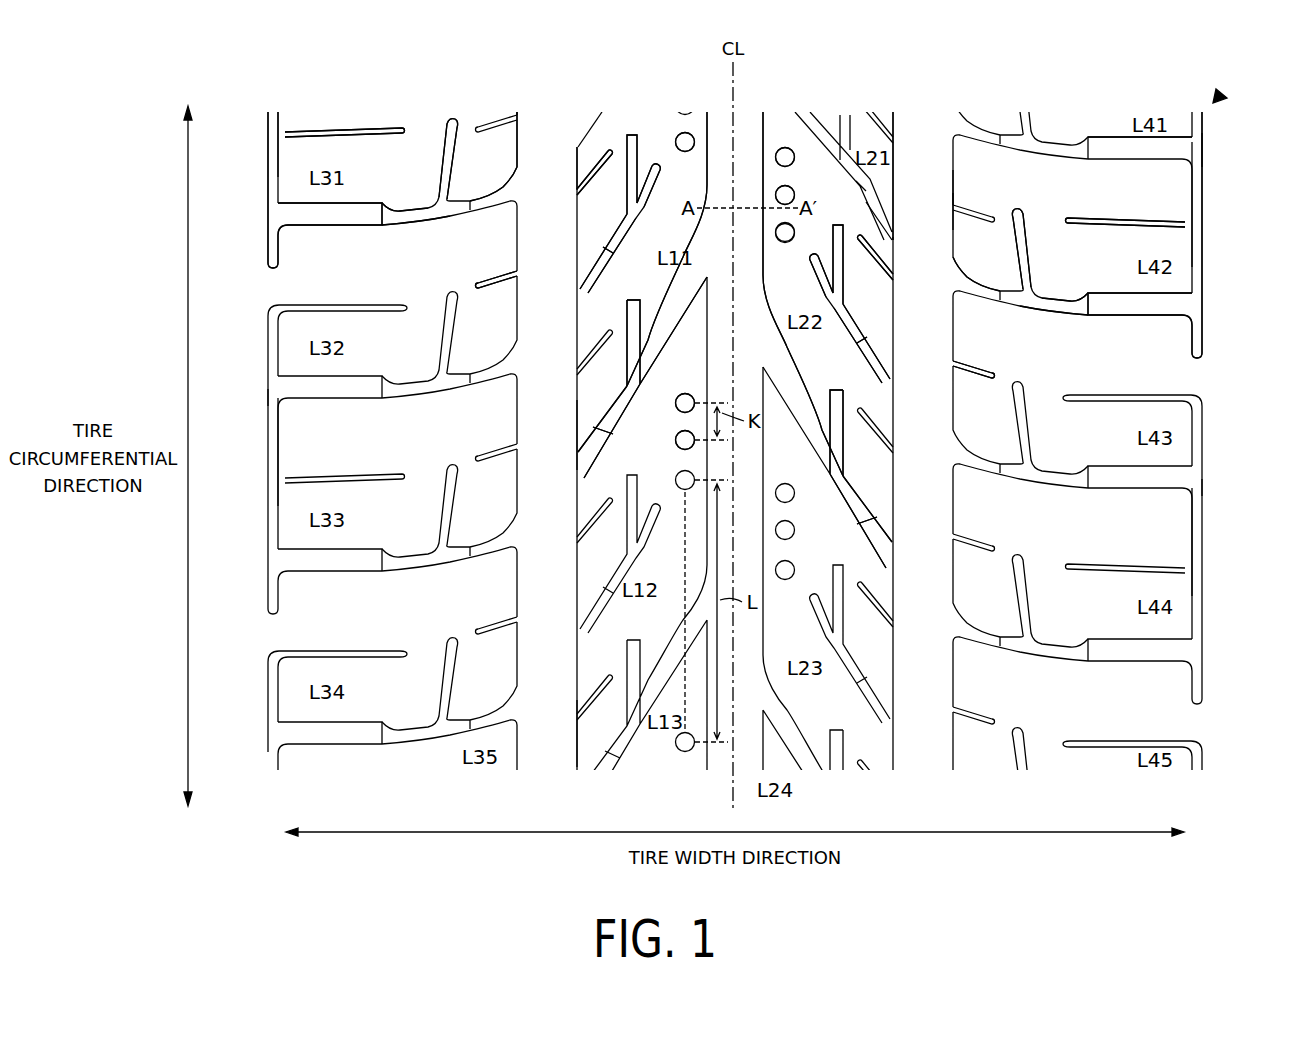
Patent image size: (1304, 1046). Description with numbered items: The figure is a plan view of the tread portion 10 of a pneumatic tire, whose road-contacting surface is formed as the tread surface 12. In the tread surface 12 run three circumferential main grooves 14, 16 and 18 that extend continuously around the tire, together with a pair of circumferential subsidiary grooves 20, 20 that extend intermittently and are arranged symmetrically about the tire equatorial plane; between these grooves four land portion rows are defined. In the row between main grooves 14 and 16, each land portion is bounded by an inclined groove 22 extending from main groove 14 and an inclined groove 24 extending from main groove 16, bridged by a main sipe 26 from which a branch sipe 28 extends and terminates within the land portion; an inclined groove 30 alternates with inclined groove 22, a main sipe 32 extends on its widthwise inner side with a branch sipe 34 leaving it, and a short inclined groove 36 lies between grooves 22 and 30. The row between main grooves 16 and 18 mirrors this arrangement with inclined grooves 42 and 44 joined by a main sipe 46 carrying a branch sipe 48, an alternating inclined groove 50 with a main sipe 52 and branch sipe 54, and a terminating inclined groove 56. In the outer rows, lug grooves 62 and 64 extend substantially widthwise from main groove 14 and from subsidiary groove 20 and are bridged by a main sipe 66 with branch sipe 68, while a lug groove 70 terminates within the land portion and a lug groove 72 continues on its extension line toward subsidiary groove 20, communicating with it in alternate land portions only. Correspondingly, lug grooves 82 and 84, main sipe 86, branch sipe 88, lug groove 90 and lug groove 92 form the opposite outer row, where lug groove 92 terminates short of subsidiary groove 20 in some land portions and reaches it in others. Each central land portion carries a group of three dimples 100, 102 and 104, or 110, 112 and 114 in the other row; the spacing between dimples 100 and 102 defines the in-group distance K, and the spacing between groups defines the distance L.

The tread portion 10 is at (1220, 95).
The tread surface 12 is at (1085, 118).
The circumferential main groove 14 is at (548, 118).
The circumferential main groove 16 is at (758, 105).
The circumferential main groove 18 is at (925, 116).
The circumferential subsidiary groove 20 is at (266, 190).
The inclined groove 22 is at (590, 452).
The inclined groove 24 is at (672, 320).
The main sipe 26 is at (640, 380).
The branch sipe 28 is at (626, 315).
The inclined groove 30 is at (592, 272).
The main sipe 32 is at (656, 178).
The branch sipe 34 is at (631, 135).
The inclined groove 36 is at (597, 175).
The inclined groove 42 is at (878, 222).
The inclined groove 44 is at (784, 378).
The main sipe 46 is at (820, 132).
The branch sipe 48 is at (838, 113).
The inclined groove 50 is at (877, 360).
The main sipe 52 is at (812, 274).
The branch sipe 54 is at (843, 248).
The inclined groove 56 is at (873, 118).
The lug groove 62 is at (490, 192).
The lug groove 64 is at (318, 229).
The main sipe 66 is at (432, 222).
The branch sipe 68 is at (450, 120).
The lug groove 70 is at (495, 281).
The lug groove 72 is at (318, 130).
The lug groove 82 is at (981, 130).
The lug groove 84 is at (1152, 165).
The main sipe 86 is at (1038, 156).
The branch sipe 88 is at (1030, 260).
The lug groove 90 is at (980, 212).
The lug groove 92 is at (1115, 222).
The dimple 100 is at (675, 403).
The dimple 102 is at (676, 441).
The dimple 104 is at (685, 152).
The dimple 110 is at (785, 157).
The dimple 112 is at (794, 194).
The dimple 114 is at (785, 243).